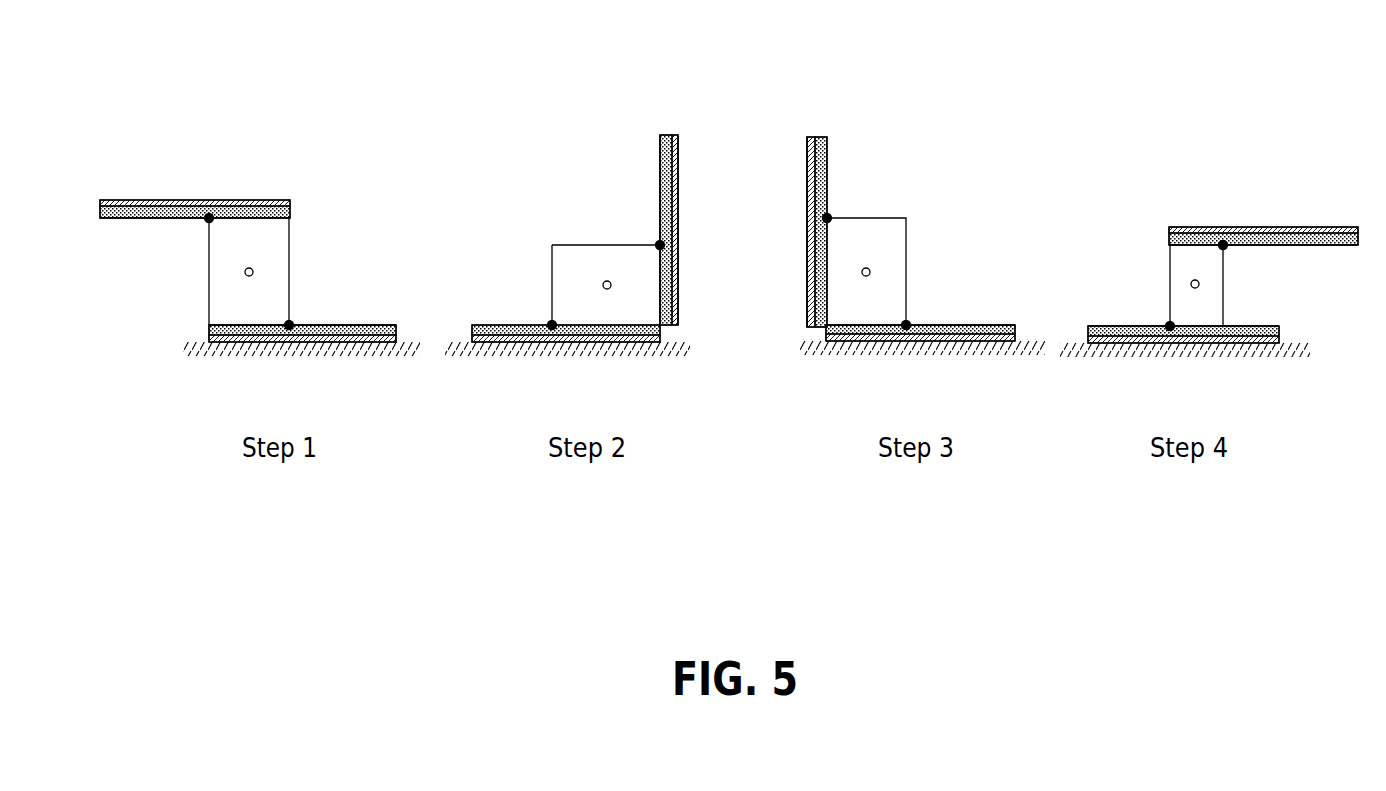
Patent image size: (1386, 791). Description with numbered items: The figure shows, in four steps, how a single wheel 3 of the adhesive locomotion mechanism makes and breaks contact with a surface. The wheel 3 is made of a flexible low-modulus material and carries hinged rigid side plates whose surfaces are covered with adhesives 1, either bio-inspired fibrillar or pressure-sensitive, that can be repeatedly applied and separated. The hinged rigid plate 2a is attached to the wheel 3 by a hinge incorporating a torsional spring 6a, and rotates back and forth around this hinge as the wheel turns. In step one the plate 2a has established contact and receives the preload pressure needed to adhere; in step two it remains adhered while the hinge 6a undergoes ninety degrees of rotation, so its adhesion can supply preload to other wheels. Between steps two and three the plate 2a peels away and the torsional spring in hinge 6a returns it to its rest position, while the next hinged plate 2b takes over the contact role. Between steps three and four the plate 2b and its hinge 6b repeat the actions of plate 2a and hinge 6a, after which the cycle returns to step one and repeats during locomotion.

The adhesives 1 is at (125, 203).
The hinged rigid plate 2a is at (215, 326).
The next hinged plate 2b is at (289, 218).
The wheel 3 is at (272, 243).
The torsional spring hinge 6a is at (289, 325).
The torsional spring hinge 6b is at (209, 218).